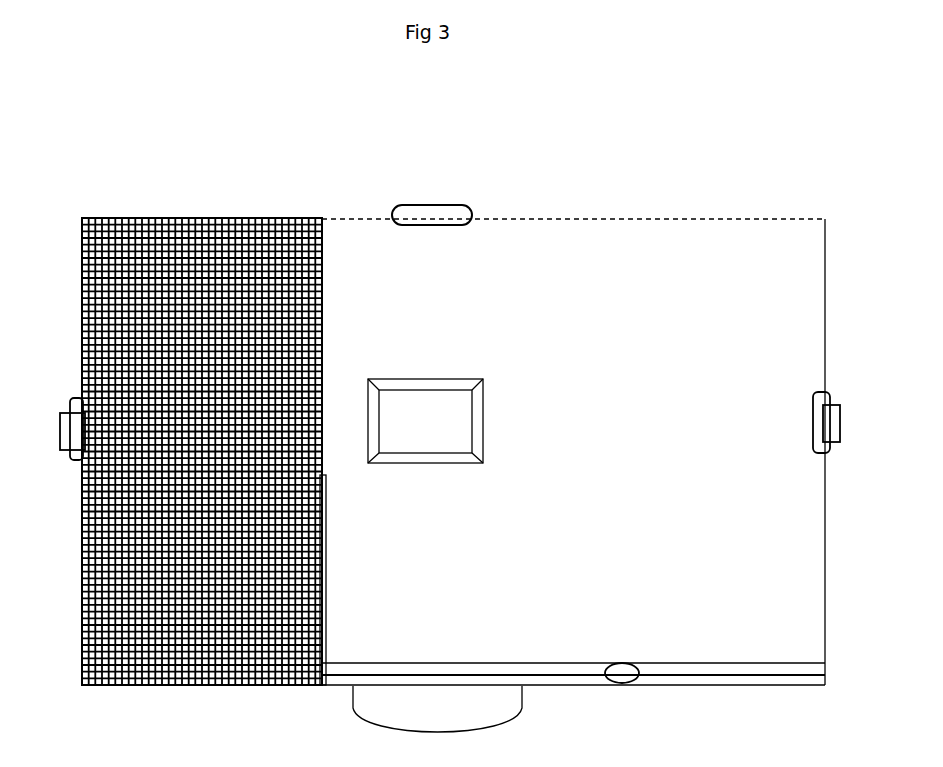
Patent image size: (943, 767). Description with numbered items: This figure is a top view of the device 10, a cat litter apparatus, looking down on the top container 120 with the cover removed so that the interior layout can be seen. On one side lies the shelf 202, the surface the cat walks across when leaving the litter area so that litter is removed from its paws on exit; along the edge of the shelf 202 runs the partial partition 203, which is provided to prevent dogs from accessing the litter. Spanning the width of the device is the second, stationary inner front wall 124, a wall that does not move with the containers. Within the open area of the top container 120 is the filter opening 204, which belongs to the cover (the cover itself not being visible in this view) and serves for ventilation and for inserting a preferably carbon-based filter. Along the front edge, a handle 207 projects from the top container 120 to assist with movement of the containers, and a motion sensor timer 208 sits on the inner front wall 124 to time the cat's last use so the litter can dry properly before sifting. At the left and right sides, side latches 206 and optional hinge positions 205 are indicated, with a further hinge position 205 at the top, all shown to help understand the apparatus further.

The device 10 is at (240, 190).
The top container 120 is at (557, 273).
The second, stationary inner front wall 124 is at (470, 670).
The shelf 202 is at (175, 638).
The partial partition 203 is at (325, 570).
The filter opening 204 is at (408, 415).
The optional hinge positions 205 is at (435, 212).
The side latches 206 is at (88, 262).
The handle 207 is at (487, 703).
The motion sensor timer 208 is at (625, 668).